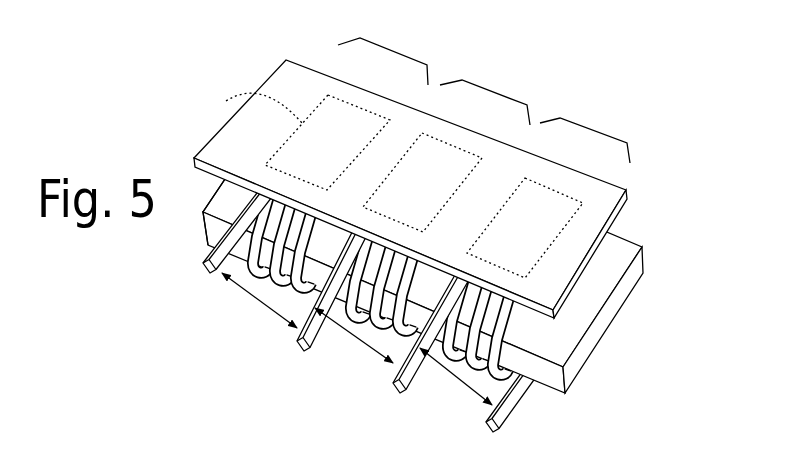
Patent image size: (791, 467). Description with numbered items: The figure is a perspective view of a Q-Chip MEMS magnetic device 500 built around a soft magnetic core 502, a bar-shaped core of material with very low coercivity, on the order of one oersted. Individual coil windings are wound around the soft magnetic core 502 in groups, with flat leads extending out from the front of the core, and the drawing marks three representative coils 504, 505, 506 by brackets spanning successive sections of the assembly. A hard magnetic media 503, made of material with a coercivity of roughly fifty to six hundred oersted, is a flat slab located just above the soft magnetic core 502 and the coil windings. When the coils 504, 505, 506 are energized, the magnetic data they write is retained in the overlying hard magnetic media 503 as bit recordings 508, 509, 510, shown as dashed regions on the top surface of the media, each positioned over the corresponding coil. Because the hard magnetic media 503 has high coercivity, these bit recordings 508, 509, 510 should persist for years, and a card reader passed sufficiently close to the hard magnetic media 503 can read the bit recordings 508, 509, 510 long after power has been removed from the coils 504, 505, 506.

The Q-Chip magnetic device 500 is at (670, 114).
The soft magnetic core 502 is at (641, 272).
The hard magnetic media 503 is at (420, 166).
The coil 504 is at (390, 50).
The coil 505 is at (493, 92).
The coil 506 is at (593, 130).
The bit recording 508 is at (307, 155).
The bit recording 509 is at (410, 193).
The bit recording 510 is at (507, 237).